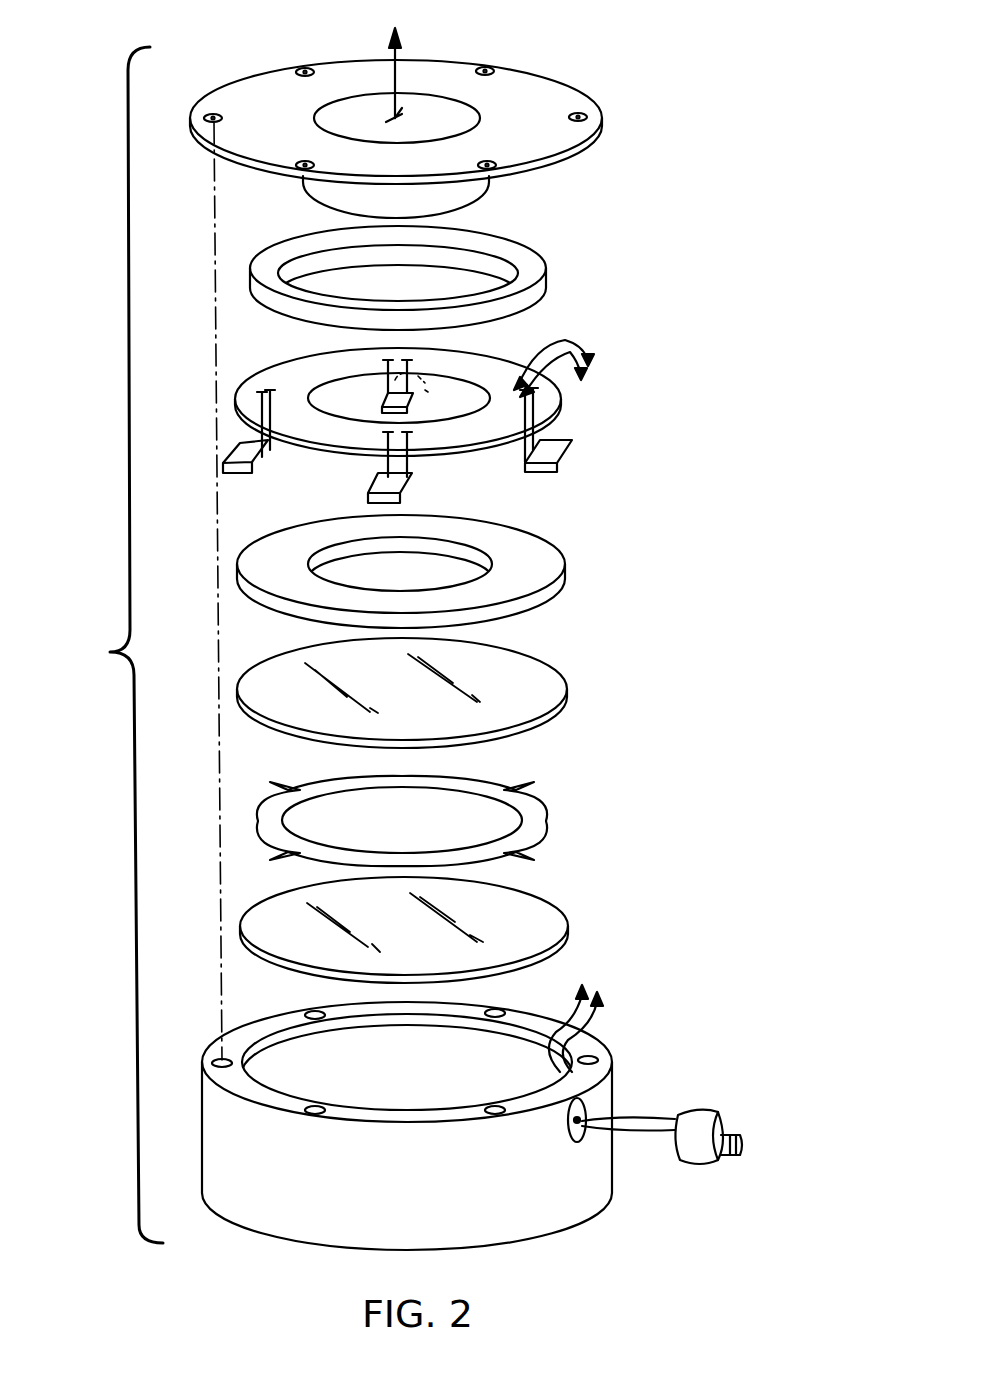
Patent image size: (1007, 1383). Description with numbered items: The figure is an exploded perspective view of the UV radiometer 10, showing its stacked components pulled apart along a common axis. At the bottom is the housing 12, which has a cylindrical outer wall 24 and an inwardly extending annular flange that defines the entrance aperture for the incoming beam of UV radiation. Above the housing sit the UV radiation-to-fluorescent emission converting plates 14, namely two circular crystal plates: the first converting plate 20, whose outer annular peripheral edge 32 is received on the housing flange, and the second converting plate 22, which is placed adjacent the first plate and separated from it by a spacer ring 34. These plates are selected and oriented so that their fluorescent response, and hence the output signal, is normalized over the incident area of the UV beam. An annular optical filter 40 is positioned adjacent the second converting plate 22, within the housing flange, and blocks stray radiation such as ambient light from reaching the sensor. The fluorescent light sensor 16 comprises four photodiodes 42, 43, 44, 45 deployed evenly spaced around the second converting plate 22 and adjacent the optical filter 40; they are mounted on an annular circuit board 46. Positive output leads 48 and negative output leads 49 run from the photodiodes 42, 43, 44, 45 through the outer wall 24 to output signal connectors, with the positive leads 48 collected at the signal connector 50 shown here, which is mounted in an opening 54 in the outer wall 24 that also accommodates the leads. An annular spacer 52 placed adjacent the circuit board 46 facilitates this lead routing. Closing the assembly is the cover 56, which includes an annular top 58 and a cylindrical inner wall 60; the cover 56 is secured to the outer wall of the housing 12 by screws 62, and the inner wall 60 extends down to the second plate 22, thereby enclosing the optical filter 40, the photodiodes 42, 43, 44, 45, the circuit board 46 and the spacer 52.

The UV radiometer 10 is at (116, 645).
The housing 12 is at (421, 1135).
The UV radiation-to-fluorescent emission converting plates 14 is at (585, 666).
The fluorescent light sensor 16 is at (638, 385).
The first converting plate 20 is at (439, 921).
The second converting plate 22 is at (518, 708).
The cylindrical outer wall 24 is at (280, 1207).
The outer annular peripheral edge 32 is at (555, 916).
The spacer ring 34 is at (537, 820).
The annular optical filter 40 is at (525, 556).
The photodiode 42 is at (555, 448).
The photodiode 43 is at (433, 395).
The photodiode 44 is at (235, 455).
The photodiode 45 is at (393, 483).
The annular circuit board 46 is at (398, 390).
The positive output leads 48 is at (555, 335).
The negative output leads 49 is at (565, 336).
The output signal connector 50 is at (697, 1123).
The annular spacer 52 is at (525, 260).
The opening 54 is at (568, 1123).
The cover 56 is at (398, 104).
The annular top 58 is at (432, 76).
The cylindrical inner wall 60 is at (464, 194).
The screws 62 is at (302, 78).